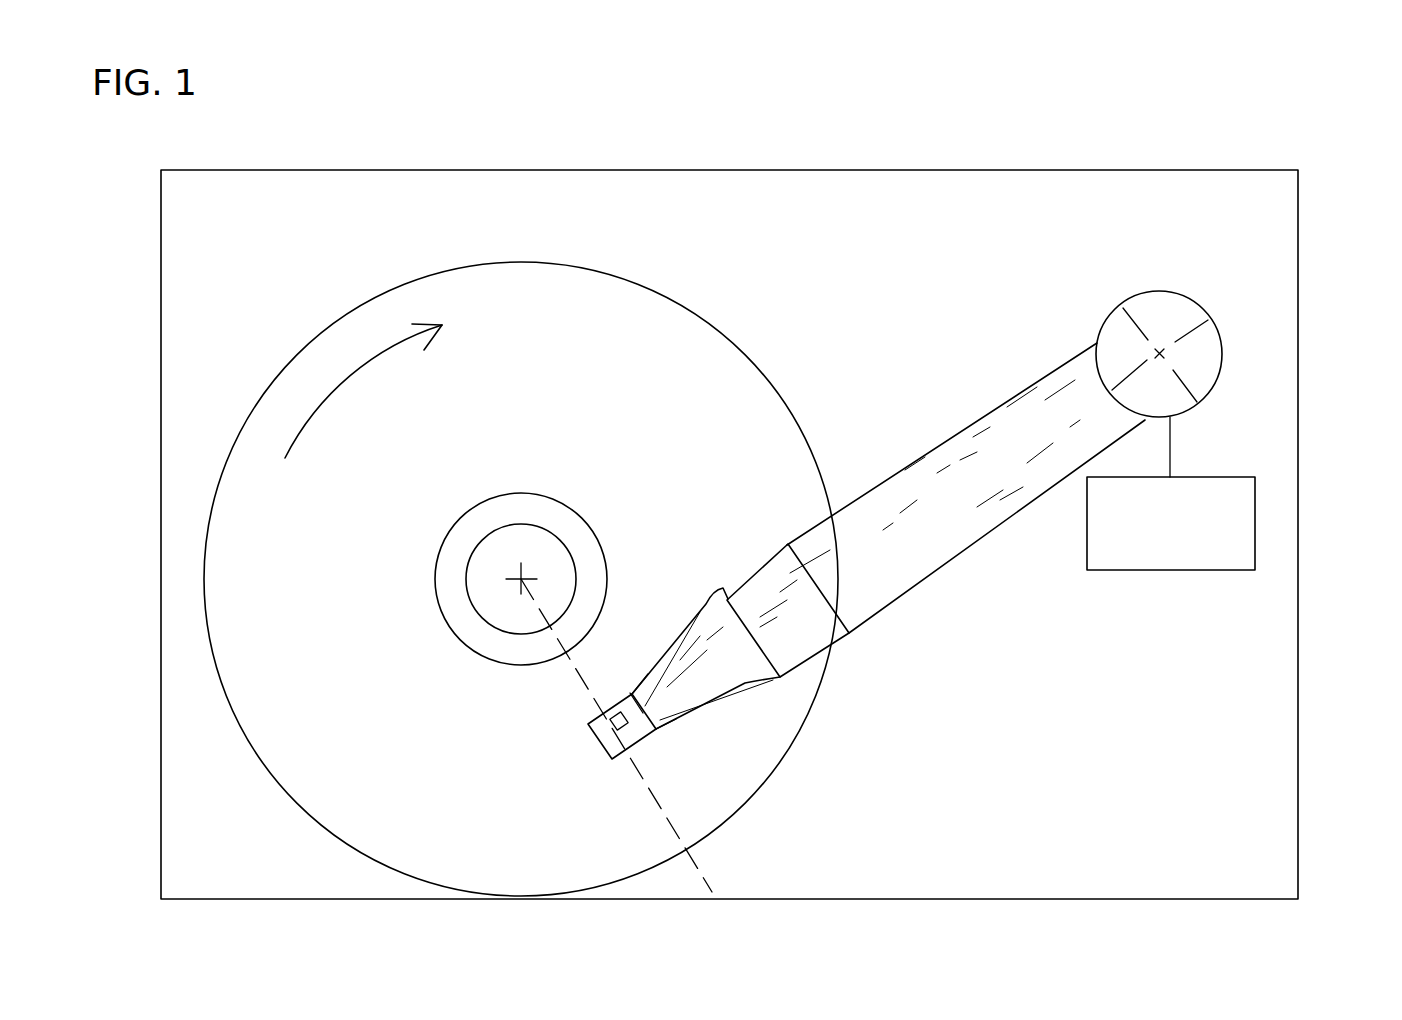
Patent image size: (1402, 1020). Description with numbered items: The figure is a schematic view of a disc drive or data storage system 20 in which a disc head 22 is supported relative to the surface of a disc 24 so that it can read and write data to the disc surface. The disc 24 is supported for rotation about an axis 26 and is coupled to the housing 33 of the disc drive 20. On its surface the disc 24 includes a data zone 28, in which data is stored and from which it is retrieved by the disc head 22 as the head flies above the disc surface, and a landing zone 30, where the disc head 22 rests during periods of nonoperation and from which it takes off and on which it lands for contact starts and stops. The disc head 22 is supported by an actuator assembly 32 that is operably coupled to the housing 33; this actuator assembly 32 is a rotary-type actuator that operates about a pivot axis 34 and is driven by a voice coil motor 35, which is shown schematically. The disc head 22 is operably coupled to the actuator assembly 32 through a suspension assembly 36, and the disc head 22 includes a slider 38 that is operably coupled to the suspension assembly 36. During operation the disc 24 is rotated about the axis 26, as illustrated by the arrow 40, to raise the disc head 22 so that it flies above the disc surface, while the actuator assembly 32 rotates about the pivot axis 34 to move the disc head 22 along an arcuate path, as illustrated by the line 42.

The disc drive 20 is at (1257, 135).
The disc head 22 is at (627, 750).
The disc 24 is at (575, 277).
The axis 26 is at (523, 573).
The data zone 28 is at (720, 448).
The landing zone 30 is at (596, 572).
The actuator assembly 32 is at (992, 410).
The housing 33 is at (1090, 170).
The pivot axis 34 is at (1160, 353).
The voice coil motor 35 is at (1233, 477).
The suspension assembly 36 is at (742, 678).
The slider 38 is at (640, 730).
The arrow 40 is at (360, 365).
The line 42 is at (692, 860).